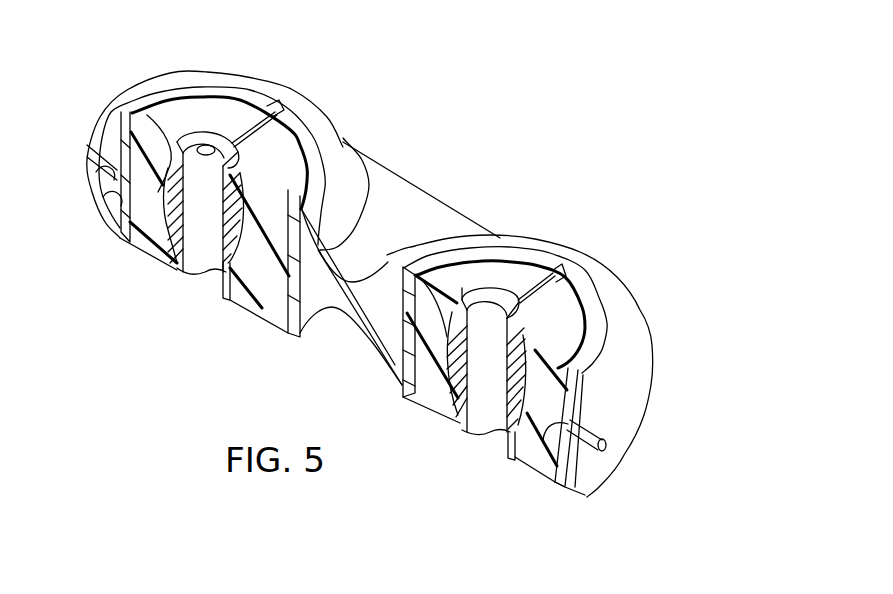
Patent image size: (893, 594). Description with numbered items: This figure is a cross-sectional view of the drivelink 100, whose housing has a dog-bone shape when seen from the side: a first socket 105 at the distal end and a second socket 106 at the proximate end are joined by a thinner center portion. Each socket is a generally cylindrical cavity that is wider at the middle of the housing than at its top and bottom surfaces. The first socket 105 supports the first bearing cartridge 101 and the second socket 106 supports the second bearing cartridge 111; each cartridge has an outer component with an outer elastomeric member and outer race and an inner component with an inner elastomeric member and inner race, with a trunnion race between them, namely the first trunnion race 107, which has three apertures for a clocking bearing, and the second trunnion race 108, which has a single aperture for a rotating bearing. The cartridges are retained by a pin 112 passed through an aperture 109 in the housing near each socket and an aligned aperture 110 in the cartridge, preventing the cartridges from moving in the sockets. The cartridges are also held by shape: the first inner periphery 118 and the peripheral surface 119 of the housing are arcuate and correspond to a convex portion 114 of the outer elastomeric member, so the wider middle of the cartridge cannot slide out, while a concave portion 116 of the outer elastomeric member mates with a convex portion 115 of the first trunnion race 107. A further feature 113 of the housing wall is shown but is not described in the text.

The drivelink 100 is at (470, 125).
The first bearing cartridge 101 is at (502, 281).
The first socket 105 is at (307, 116).
The second socket 106 is at (588, 282).
The first trunnion race 107 is at (198, 262).
The second trunnion race 108 is at (482, 420).
The housing aperture 109 is at (603, 448).
The cartridge aperture 110 is at (541, 458).
The second bearing cartridge 111 is at (213, 115).
The pin 112 is at (590, 430).
The cup outer wall 113 is at (100, 180).
The convex portion 114 is at (107, 225).
The convex portion 115 is at (152, 242).
The concave portion 116 is at (152, 120).
The first inner periphery 118 is at (100, 118).
The peripheral surface 119 is at (605, 338).